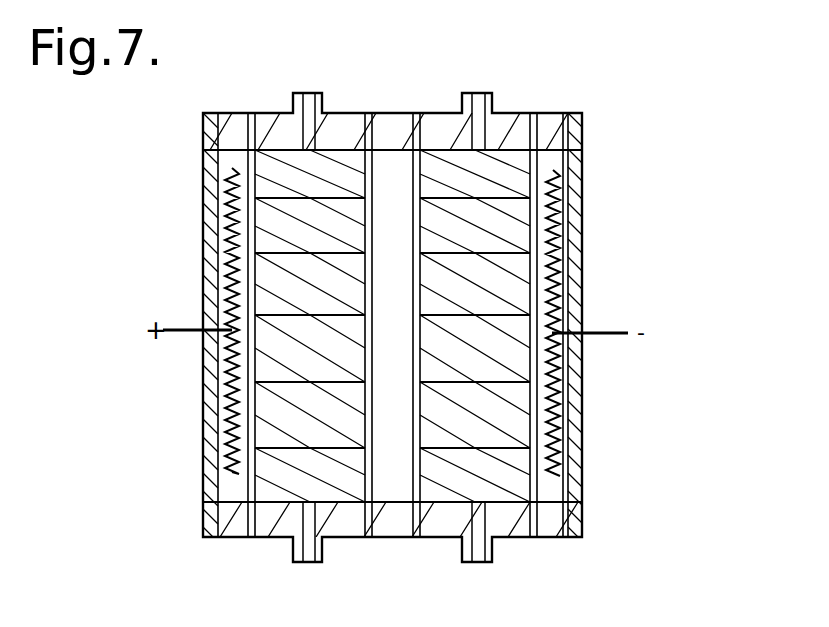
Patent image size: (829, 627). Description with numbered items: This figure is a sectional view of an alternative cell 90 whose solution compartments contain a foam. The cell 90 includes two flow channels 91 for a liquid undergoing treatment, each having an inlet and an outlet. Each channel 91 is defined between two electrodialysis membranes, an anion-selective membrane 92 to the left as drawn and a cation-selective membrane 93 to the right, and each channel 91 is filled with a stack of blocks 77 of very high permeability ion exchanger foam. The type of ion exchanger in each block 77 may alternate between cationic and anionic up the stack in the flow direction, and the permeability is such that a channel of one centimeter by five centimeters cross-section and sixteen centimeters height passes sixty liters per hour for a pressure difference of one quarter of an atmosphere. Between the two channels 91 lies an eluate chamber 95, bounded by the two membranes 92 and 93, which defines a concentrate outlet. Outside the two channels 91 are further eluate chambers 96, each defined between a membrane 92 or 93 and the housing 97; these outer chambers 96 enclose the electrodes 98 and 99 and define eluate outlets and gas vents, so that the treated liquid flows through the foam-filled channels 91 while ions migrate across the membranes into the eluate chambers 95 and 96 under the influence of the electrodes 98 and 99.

The cell 90 is at (565, 72).
The flow channel 91 is at (275, 160).
The eluate chamber 95 is at (380, 160).
The housing 97 is at (203, 128).
The eluate chamber 96 is at (560, 181).
The electrode 99 is at (558, 250).
The electrode 98 is at (227, 297).
The block 77 is at (277, 322).
The anion-selective membrane 92 is at (230, 445).
The cation-selective membrane 93 is at (543, 460).